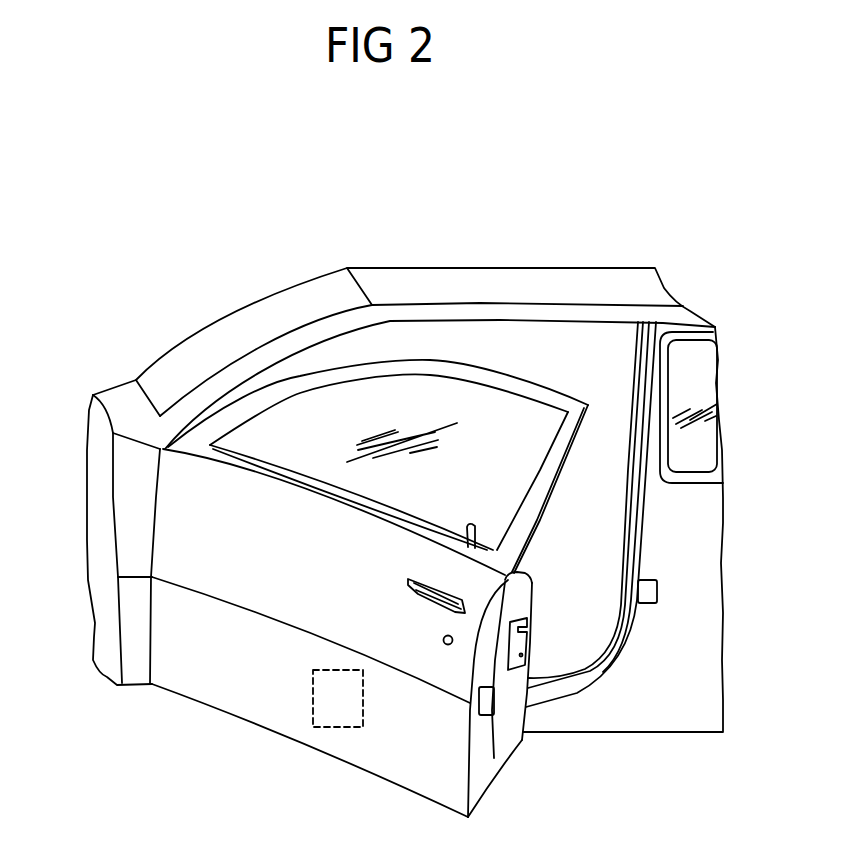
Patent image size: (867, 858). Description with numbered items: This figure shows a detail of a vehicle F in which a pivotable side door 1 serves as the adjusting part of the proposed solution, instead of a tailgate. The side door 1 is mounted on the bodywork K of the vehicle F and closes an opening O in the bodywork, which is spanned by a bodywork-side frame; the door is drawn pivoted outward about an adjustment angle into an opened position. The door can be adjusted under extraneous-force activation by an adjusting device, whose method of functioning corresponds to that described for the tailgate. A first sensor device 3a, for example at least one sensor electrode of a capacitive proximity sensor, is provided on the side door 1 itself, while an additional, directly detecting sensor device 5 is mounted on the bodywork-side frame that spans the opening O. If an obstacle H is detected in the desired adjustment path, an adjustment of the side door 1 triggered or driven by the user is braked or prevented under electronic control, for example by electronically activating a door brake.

The side door 1 is at (443, 773).
The sensor device 3a is at (485, 703).
The sensor device 5 is at (657, 590).
The bodywork K is at (642, 289).
The bodywork opening O is at (628, 511).
The vehicle F is at (712, 615).
The obstacle H is at (327, 713).